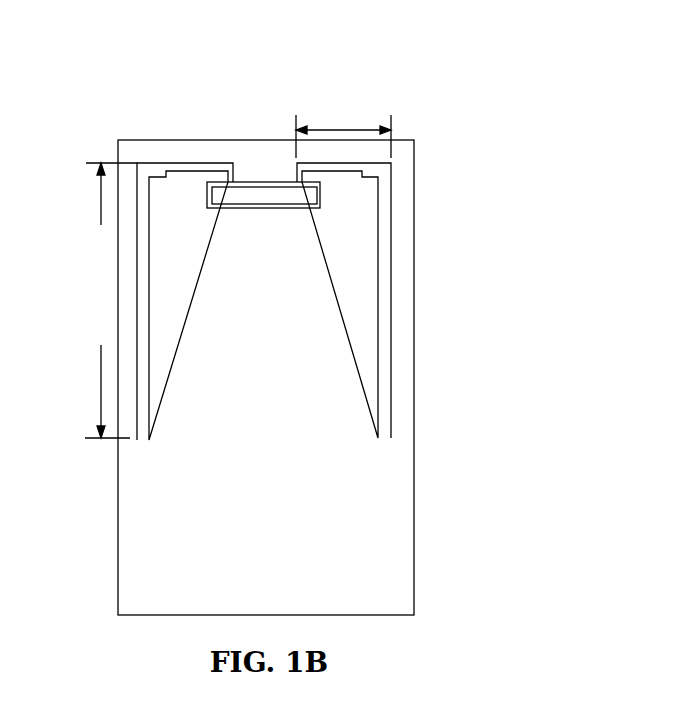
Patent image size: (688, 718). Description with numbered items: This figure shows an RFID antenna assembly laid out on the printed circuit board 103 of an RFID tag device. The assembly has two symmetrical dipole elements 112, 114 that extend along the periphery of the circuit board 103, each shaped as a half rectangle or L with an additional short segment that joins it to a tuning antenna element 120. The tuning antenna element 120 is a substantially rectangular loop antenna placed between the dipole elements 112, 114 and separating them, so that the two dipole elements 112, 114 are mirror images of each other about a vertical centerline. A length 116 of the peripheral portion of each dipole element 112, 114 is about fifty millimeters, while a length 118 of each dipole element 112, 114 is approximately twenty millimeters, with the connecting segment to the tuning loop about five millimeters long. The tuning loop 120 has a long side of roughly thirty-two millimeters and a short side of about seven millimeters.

The printed circuit board 103 is at (414, 572).
The dipole element 112 is at (136, 163).
The dipole element 114 is at (382, 240).
The length of peripheral portion 116 is at (111, 300).
The length of dipole element 118 is at (343, 130).
The tuning antenna element 120 is at (207, 209).